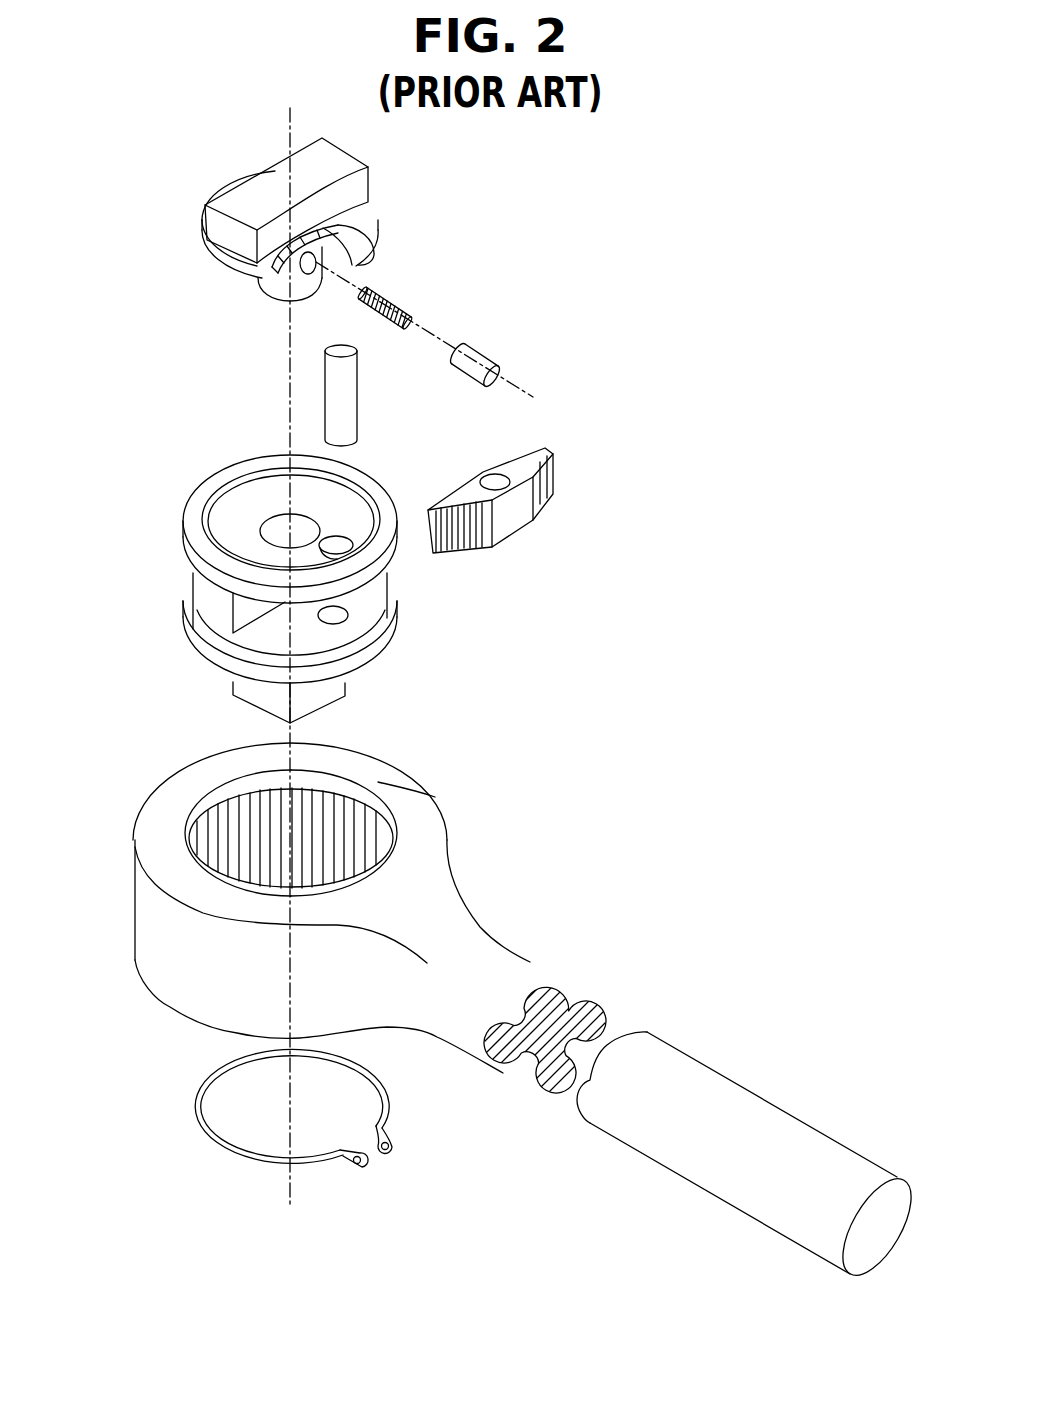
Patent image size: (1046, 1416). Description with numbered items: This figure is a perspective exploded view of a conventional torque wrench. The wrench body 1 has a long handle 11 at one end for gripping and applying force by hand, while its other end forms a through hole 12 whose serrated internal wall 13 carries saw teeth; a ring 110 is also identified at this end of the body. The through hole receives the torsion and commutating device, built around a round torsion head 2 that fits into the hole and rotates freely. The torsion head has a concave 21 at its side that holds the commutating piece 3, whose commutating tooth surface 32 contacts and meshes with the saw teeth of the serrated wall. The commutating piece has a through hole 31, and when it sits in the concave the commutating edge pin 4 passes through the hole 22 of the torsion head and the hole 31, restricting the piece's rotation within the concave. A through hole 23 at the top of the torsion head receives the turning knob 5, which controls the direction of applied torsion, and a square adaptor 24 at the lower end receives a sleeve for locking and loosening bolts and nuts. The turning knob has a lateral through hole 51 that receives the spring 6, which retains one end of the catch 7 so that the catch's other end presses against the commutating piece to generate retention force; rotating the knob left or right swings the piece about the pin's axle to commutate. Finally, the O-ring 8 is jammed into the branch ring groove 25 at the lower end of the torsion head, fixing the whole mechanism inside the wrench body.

The wrench body 1 is at (153, 828).
The long handle 11 is at (505, 965).
The ring 110 is at (423, 810).
The through hole 12 is at (200, 828).
The serrated internal wall 13 is at (240, 803).
The round torsion head 2 is at (196, 498).
The concave 21 is at (373, 597).
The through hole 22 is at (356, 534).
The through hole 23 is at (270, 528).
The square adaptor 24 is at (322, 697).
The branch ring groove 25 is at (368, 650).
The commutating piece 3 is at (527, 462).
The through hole 31 is at (493, 480).
The commutating tooth surface 32 is at (485, 534).
The commutating edge pin 4 is at (358, 378).
The turning knob 5 is at (356, 185).
The lateral through hole 51 is at (343, 236).
The spring 6 is at (398, 298).
The catch 7 is at (478, 352).
The O-ring 8 is at (212, 1140).